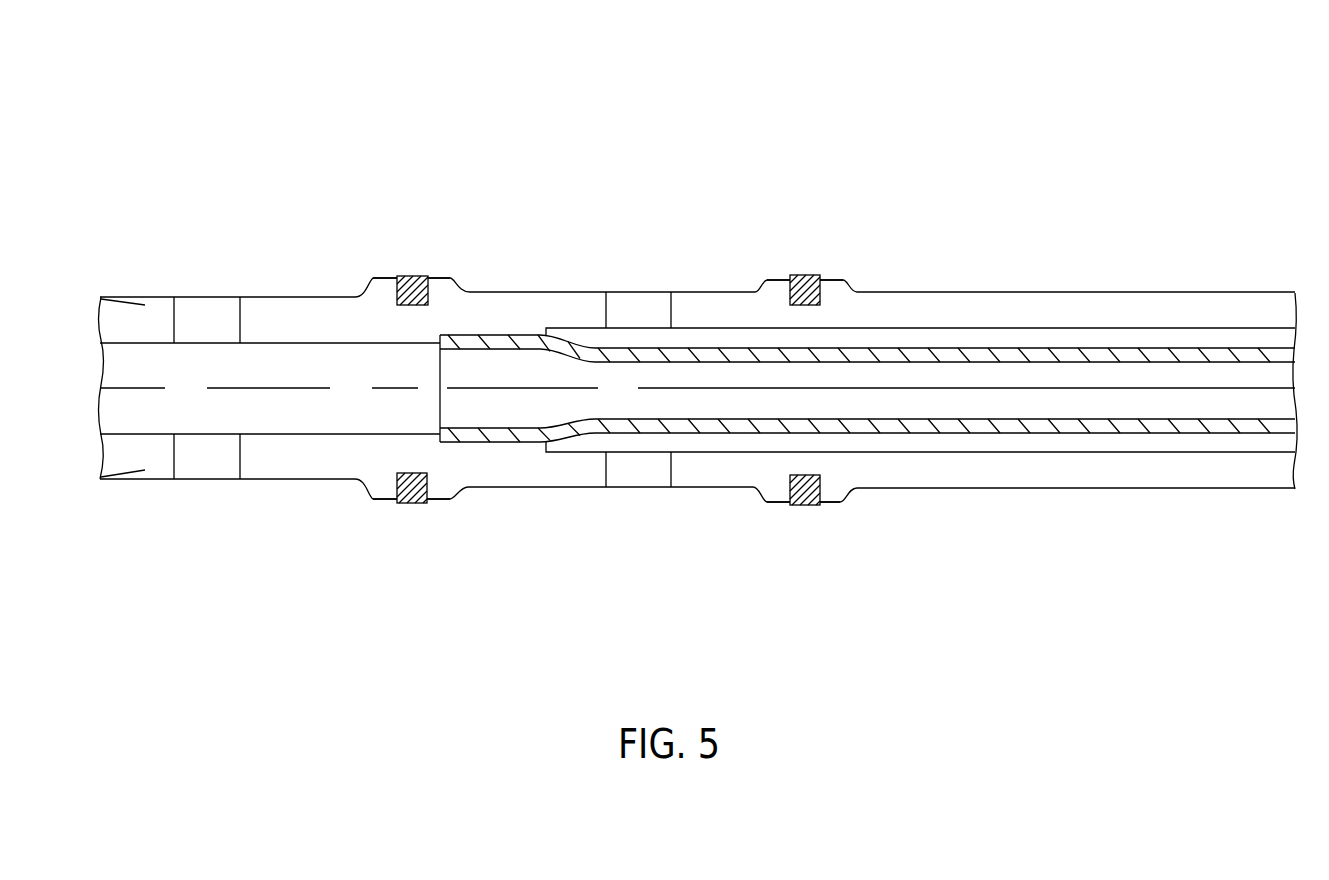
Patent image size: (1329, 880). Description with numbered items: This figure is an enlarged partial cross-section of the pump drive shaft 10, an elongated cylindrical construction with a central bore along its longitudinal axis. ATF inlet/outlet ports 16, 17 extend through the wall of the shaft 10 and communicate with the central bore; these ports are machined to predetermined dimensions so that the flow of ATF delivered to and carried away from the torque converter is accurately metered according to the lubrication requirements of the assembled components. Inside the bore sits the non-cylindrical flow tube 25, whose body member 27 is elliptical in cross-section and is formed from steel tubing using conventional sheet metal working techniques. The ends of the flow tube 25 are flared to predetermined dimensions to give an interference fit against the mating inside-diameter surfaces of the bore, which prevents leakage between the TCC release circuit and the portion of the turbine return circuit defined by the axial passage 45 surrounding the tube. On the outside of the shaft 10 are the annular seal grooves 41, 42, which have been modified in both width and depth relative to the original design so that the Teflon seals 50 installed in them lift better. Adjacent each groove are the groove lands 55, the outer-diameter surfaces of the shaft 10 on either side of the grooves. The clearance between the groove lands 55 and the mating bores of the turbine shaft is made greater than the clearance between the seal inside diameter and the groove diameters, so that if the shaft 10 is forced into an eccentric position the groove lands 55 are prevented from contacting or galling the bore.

The pump drive shaft 10 is at (673, 100).
The ATF inlet/outlet port 16 is at (200, 460).
The ATF inlet/outlet port 17 is at (640, 487).
The flow tube 25 is at (1128, 315).
The body member 27 is at (1020, 430).
The annular seal groove 41 is at (443, 278).
The annular seal groove 42 is at (789, 292).
The axial passage 45 is at (1172, 445).
The Teflon seal 50 is at (397, 277).
The groove land 55 is at (383, 278).